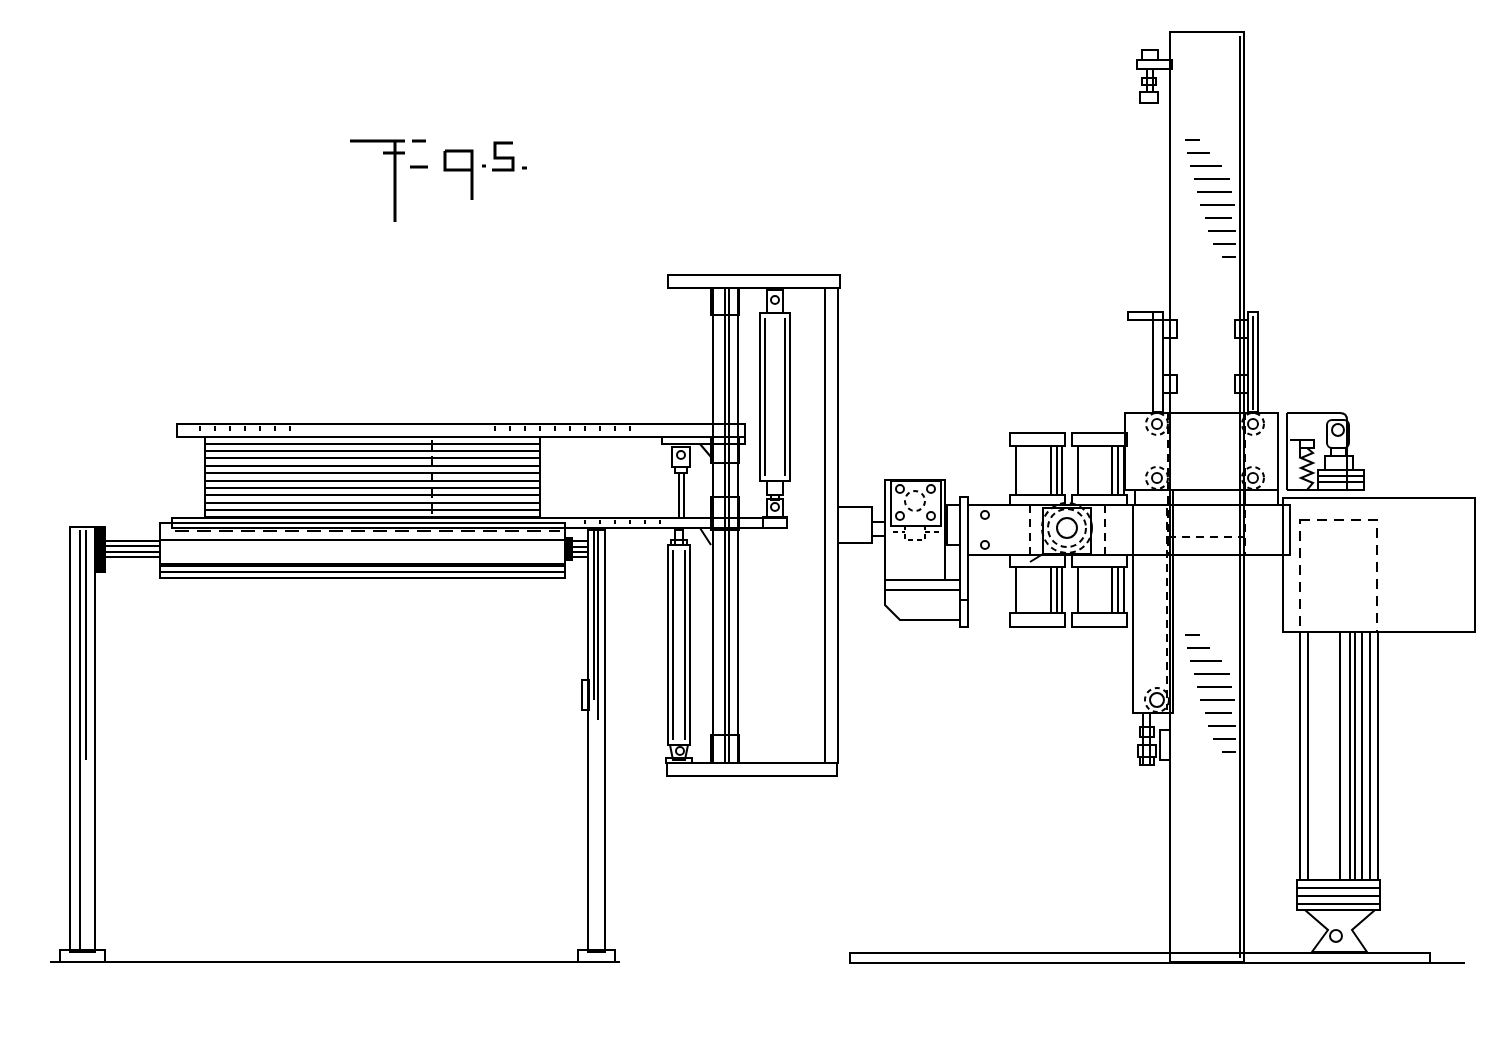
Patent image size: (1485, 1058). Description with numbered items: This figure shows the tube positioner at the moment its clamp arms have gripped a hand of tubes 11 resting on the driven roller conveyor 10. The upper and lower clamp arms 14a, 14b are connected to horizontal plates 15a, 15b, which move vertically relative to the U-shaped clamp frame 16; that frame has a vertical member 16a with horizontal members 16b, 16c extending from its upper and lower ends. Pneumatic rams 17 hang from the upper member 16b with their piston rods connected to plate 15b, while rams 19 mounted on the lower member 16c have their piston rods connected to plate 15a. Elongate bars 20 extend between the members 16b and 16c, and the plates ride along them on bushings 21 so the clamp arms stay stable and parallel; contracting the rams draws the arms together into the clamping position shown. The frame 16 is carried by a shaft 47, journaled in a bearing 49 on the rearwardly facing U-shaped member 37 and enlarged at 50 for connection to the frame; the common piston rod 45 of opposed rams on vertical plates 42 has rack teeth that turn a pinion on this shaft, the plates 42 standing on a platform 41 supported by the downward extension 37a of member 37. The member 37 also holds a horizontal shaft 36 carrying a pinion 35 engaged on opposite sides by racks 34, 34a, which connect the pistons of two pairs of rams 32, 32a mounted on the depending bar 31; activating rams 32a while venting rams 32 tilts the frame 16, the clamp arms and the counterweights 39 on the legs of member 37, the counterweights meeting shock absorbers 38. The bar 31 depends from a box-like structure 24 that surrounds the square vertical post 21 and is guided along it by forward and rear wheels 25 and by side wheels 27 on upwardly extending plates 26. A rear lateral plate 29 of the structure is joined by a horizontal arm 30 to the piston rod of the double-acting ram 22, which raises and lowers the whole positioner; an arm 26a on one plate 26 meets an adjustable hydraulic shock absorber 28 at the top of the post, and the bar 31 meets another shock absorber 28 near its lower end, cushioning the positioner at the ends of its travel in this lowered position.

The driven roller conveyor 10 is at (305, 598).
The hand of tubes 11 is at (205, 470).
The upper clamp arm 14a is at (482, 424).
The lower clamp arm 14b is at (480, 528).
The horizontal plate 15a is at (672, 452).
The horizontal plate 15b is at (775, 530).
The clamp frame 16 is at (772, 529).
The vertical member 16a is at (840, 420).
The upper horizontal member 16b is at (676, 275).
The lower horizontal member 16c is at (710, 777).
The pneumatic rams 17 is at (782, 368).
The rams 19 is at (668, 630).
The elongate bars 20 is at (715, 338).
The vertical post 21 is at (712, 418).
The double-acting ram 22 is at (1330, 790).
The box-like structure 24 is at (1135, 414).
The forward and rear wheels 25 is at (1250, 475).
The upwardly extending plates 26 is at (1153, 342).
The arm 26a is at (1132, 312).
The side wheels 27 is at (1235, 380).
The adjustable hydraulic shock absorber 28 is at (1137, 65).
The rear lateral plate 29 is at (1285, 414).
The horizontal arm 30 is at (1322, 414).
The depending bar 31 is at (1133, 705).
The rams 32 is at (1098, 452).
The rams 32a is at (1036, 445).
The rack 34 is at (1108, 520).
The rack 34a is at (1040, 548).
The pinion 35 is at (1055, 560).
The horizontal shaft 36 is at (1062, 522).
The U-shaped member 37 is at (970, 505).
The downward extension 37a is at (963, 630).
The shock absorbers 38 is at (1340, 468).
The counterweights 39 is at (1444, 588).
The platform 41 is at (915, 610).
The vertical plates 42 is at (915, 504).
The common piston rod 45 is at (915, 495).
The shaft 47 is at (878, 540).
The bearing 49 is at (953, 505).
The enlargement 50 is at (862, 507).